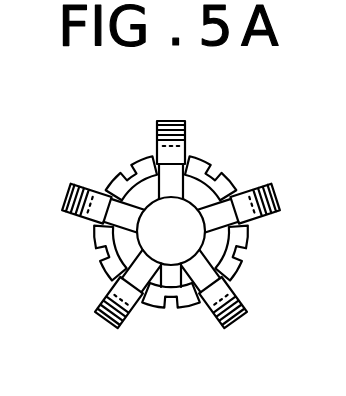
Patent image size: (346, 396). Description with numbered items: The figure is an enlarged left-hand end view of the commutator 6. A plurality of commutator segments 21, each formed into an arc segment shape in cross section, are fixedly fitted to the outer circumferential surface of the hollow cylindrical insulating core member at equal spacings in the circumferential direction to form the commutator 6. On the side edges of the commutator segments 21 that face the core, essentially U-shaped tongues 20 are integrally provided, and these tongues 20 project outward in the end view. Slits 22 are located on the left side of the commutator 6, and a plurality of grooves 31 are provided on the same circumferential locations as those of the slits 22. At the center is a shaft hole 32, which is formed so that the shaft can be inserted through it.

The commutator 6 is at (86, 171).
The tongues 20 is at (155, 141).
The commutator segments 21 is at (245, 237).
The slits 22 is at (224, 170).
The grooves 31 is at (234, 280).
The shaft hole 32 is at (160, 239).